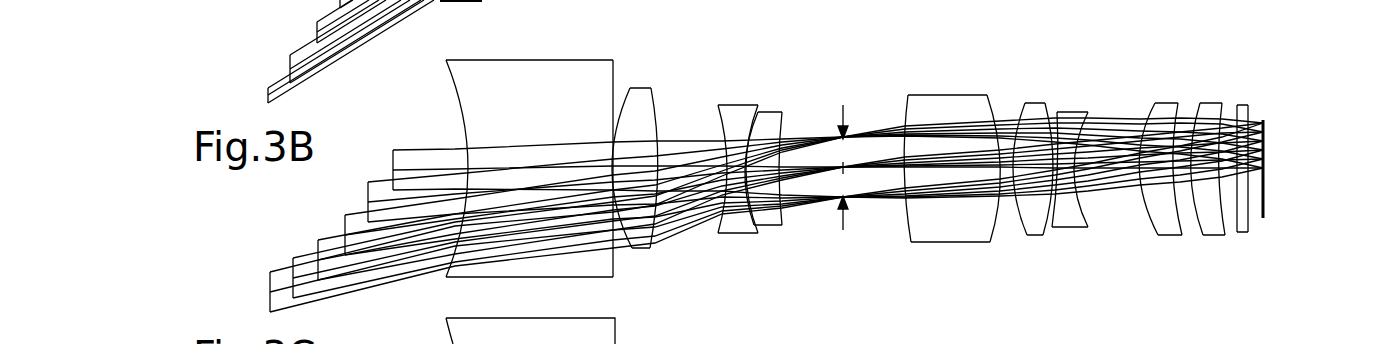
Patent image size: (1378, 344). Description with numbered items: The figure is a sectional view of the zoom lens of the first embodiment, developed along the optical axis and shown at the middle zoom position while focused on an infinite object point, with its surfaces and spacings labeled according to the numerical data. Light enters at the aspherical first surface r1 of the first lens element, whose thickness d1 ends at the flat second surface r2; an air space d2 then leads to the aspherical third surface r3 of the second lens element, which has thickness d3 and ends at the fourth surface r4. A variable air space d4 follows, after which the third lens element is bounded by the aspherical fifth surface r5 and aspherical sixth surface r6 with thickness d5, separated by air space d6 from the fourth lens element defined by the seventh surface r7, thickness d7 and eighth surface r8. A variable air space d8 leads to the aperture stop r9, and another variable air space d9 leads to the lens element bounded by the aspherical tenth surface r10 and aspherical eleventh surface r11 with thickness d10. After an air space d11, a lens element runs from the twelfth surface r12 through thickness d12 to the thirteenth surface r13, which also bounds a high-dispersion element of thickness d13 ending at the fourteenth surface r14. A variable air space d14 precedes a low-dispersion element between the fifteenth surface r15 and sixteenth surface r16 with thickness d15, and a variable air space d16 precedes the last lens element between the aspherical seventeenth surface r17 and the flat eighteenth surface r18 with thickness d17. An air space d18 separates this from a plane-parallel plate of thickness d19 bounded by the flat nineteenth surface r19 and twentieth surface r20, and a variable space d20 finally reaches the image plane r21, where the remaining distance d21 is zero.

The radius of curvature of first lens surface r1 is at (447, 92).
The radius of curvature of second lens surface r2 is at (613, 80).
The radius of curvature of third lens surface r3 is at (636, 88).
The radius of curvature of fourth lens surface r4 is at (656, 108).
The radius of curvature of fifth lens surface r5 is at (720, 123).
The radius of curvature of sixth lens surface r6 is at (752, 110).
The radius of curvature of seventh lens surface r7 is at (754, 113).
The radius of curvature of eighth lens surface r8 is at (783, 113).
The aperture stop r9 is at (843, 106).
The radius of curvature of tenth lens surface r10 is at (906, 97).
The radius of curvature of eleventh lens surface r11 is at (990, 98).
The radius of curvature of twelfth lens surface r12 is at (1023, 103).
The radius of curvature of thirteenth lens surface r13 is at (1049, 104).
The radius of curvature of fourteenth lens surface r14 is at (1072, 112).
The radius of curvature of fifteenth lens surface r15 is at (1092, 112).
The radius of curvature of sixteenth lens surface r16 is at (1152, 103).
The radius of curvature of seventeenth lens surface r17 is at (1178, 103).
The radius of curvature of eighteenth lens surface r18 is at (1203, 103).
The radius of curvature of nineteenth surface r19 is at (1223, 103).
The radius of curvature of twentieth surface r20 is at (1243, 105).
The image plane r21 is at (1252, 124).
The thickness of first lens d1 is at (560, 170).
The air space between first and second lenses d2 is at (624, 235).
The thickness of second lens d3 is at (660, 234).
The variable air space D4 d4 is at (697, 218).
The thickness of third lens d5 is at (735, 234).
The air space between third and fourth lenses d6 is at (745, 230).
The thickness of fourth lens d7 is at (785, 228).
The variable air space D8 d8 is at (818, 208).
The variable air space D9 d9 is at (875, 207).
The thickness of fifth lens d10 is at (950, 230).
The air space between fifth and sixth lenses d11 is at (1006, 240).
The thickness of sixth lens d12 is at (1030, 236).
The thickness of seventh lens d13 is at (1050, 236).
The variable air space D14 d14 is at (1078, 205).
The thickness of eighth lens d15 is at (1135, 236).
The variable air space D16 d16 is at (1170, 237).
The thickness of ninth lens d17 is at (1191, 237).
The air space between ninth lens and plate d18 is at (1214, 237).
The thickness of plane-parallel plate d19 is at (1232, 215).
The variable space D20 d20 is at (1244, 173).
The distance at image plane d21 is at (1265, 158).